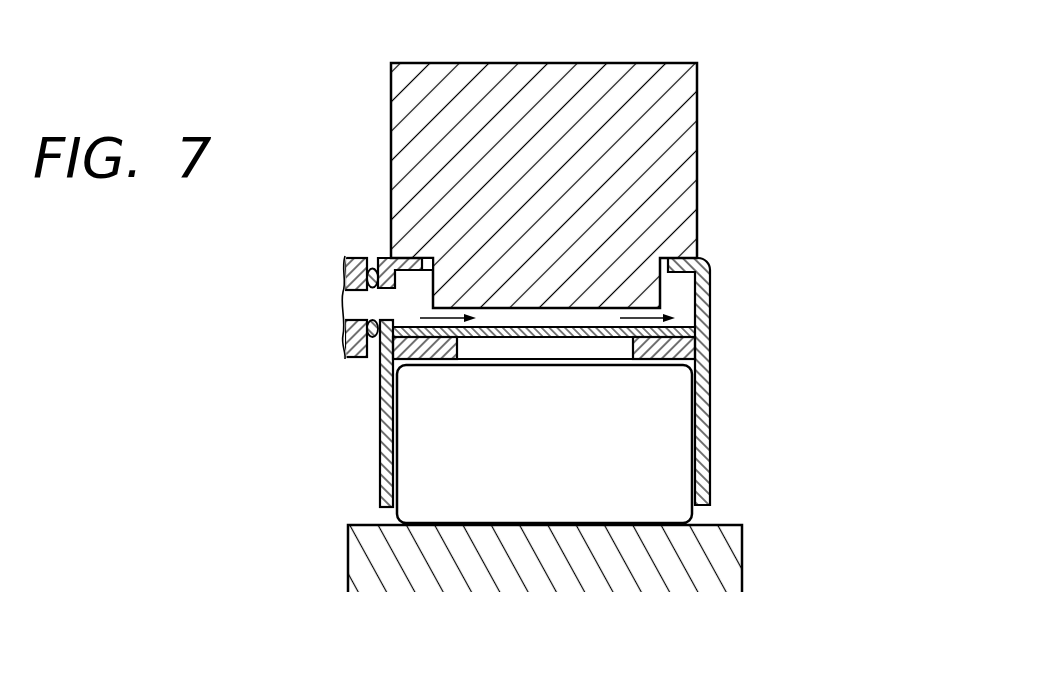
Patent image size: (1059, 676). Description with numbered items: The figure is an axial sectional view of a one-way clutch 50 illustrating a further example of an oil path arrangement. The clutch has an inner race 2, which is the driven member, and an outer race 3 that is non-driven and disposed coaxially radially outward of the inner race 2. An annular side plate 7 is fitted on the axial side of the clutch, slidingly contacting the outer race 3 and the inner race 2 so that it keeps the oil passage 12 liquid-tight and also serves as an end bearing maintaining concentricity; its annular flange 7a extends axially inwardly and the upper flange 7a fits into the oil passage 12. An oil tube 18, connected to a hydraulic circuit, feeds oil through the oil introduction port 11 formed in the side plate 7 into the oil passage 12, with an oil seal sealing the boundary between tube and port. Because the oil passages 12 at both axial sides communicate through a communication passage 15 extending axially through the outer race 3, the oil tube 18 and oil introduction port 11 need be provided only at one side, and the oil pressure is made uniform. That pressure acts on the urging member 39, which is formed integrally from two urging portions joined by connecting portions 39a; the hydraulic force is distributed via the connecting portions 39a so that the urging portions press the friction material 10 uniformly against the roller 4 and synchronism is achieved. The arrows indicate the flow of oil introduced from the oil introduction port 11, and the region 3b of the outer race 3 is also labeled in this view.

The one-way clutch 50 is at (718, 68).
The outer race 3 is at (558, 70).
The protruding portion of head body 3b is at (487, 312).
The annular flange 7a is at (403, 256).
The side plate 7 is at (383, 440).
The oil tube 18 is at (352, 264).
The oil introduction port 11 is at (388, 307).
The oil passage 12 is at (706, 278).
The communication passage 15 is at (582, 312).
The urging member 39 is at (706, 333).
The connecting portion 39a is at (585, 340).
The friction material 10 is at (712, 362).
The roller 4 is at (672, 452).
The inner race 2 is at (727, 567).